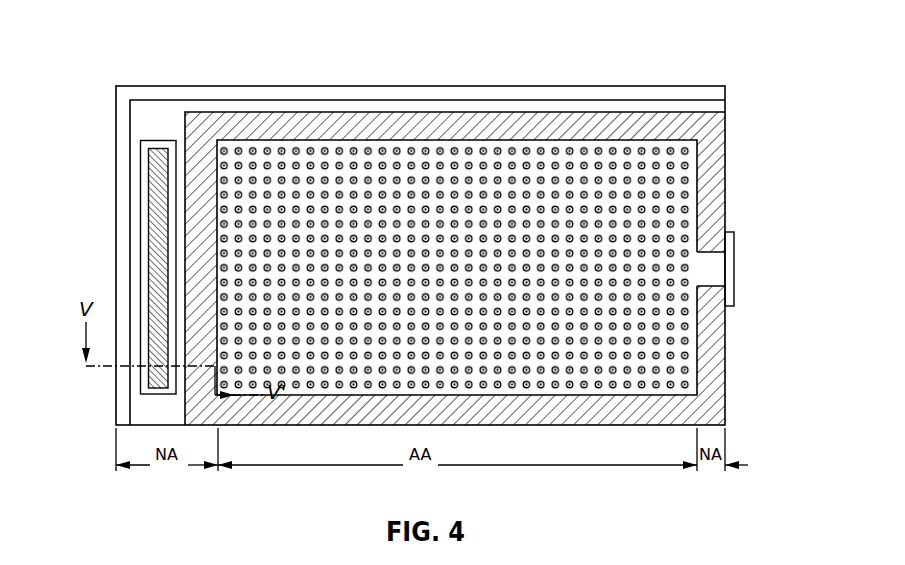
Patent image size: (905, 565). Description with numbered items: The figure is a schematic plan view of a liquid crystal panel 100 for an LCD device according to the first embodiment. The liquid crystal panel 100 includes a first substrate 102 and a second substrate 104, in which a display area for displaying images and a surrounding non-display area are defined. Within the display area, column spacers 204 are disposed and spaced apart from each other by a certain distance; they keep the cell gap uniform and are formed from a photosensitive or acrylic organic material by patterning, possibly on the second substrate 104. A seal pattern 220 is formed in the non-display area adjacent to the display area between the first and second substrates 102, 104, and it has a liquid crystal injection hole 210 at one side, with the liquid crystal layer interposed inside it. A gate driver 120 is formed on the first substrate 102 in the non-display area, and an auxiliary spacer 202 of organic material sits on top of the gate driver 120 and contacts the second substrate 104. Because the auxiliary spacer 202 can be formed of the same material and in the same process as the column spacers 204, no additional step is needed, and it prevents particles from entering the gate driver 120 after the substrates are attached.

The liquid crystal panel 100 is at (420, 212).
The first substrate 102 is at (613, 88).
The second substrate 104 is at (642, 103).
The gate driver 120 is at (140, 178).
The auxiliary spacer 202 is at (148, 153).
The column spacers 204 is at (472, 400).
The liquid crystal injection hole 210 is at (724, 269).
The seal pattern 220 is at (617, 424).